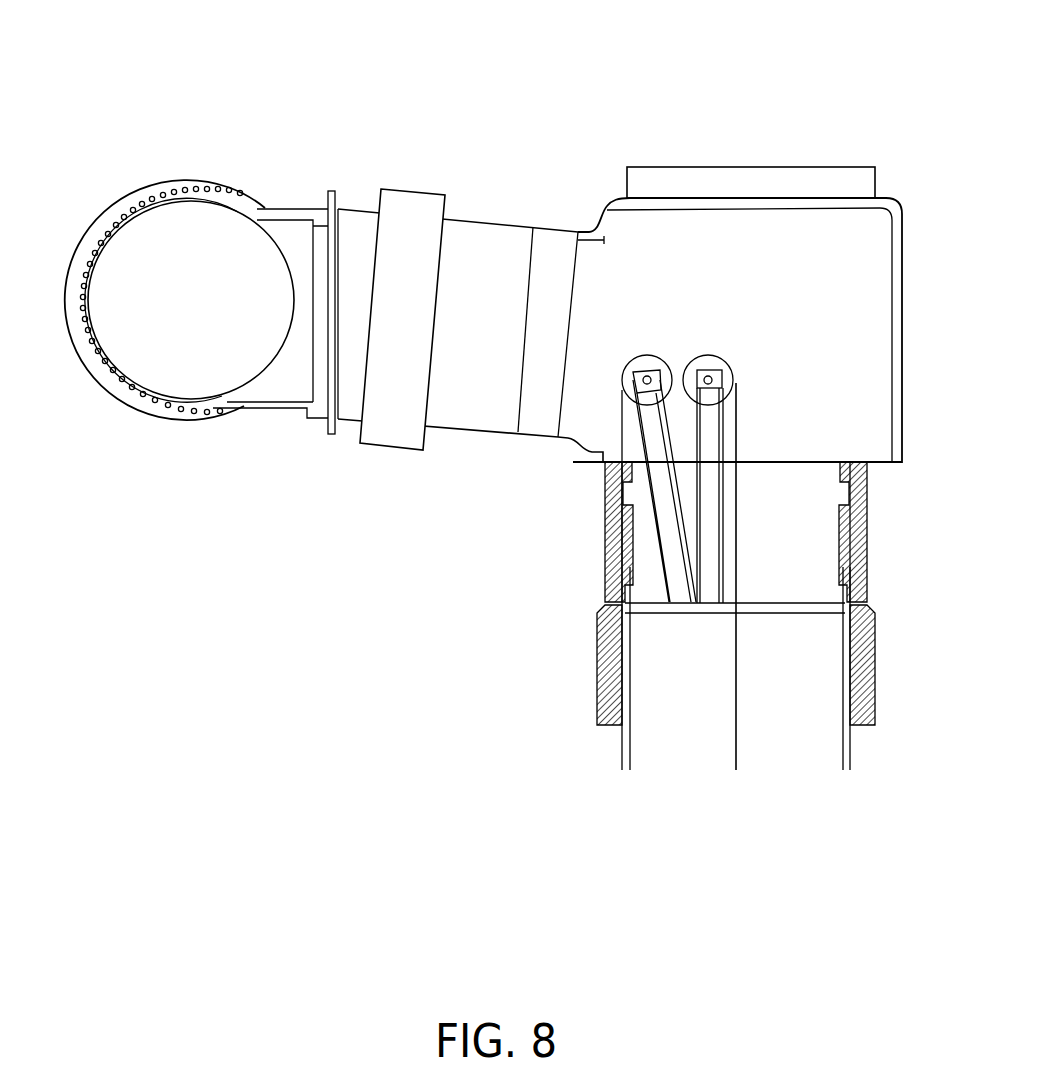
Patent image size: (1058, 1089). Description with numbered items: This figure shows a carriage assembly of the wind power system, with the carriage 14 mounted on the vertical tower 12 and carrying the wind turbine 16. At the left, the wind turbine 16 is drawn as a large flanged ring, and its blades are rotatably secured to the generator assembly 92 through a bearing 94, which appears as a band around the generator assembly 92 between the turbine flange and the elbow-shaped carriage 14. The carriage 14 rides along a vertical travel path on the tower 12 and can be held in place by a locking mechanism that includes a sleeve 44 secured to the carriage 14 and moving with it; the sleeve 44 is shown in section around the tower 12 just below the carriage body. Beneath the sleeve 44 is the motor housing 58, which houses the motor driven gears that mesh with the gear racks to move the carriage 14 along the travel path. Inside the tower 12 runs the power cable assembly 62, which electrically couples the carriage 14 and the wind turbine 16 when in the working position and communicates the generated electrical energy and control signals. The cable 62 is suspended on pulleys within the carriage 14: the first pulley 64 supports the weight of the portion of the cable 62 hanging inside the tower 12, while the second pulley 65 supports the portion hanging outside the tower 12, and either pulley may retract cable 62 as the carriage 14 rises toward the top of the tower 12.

The vertical tower 12 is at (747, 177).
The carriage 14 is at (563, 240).
The wind turbine 16 is at (187, 226).
The sleeve 44 is at (605, 528).
The motor housing 58 is at (597, 660).
The power cable assembly 62 is at (737, 727).
The first pulley 64 is at (710, 352).
The second pulley 65 is at (648, 353).
The generator assembly 92 is at (473, 240).
The bearing 94 is at (402, 223).